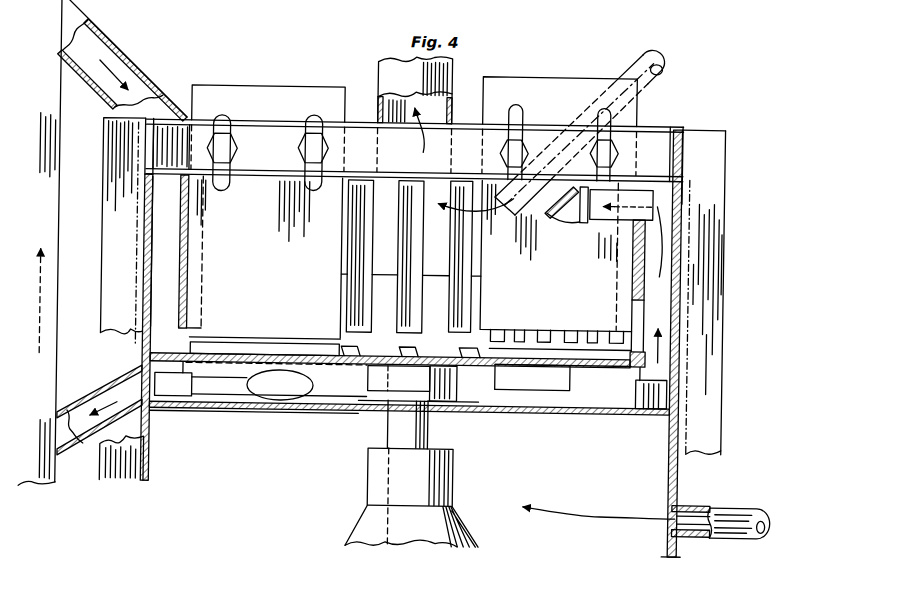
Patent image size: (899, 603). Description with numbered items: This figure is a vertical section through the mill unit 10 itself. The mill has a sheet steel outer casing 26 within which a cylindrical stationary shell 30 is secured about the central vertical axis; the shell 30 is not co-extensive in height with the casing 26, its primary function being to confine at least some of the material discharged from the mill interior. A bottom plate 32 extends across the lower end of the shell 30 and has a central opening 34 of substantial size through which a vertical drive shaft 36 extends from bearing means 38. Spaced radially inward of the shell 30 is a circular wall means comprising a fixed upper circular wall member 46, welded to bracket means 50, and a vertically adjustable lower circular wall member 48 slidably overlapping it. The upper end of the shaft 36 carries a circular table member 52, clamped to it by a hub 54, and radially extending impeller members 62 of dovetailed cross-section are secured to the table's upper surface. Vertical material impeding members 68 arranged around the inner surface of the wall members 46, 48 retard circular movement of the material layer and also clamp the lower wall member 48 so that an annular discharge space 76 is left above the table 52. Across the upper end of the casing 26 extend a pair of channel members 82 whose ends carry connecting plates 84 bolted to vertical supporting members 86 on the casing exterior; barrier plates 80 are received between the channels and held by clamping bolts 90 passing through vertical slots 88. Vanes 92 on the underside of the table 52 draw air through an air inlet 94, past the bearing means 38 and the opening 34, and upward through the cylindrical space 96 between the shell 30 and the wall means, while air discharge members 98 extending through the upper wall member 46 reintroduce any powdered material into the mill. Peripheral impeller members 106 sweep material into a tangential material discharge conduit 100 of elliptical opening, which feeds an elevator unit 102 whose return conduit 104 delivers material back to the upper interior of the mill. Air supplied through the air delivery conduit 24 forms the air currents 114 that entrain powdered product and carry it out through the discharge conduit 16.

The mill unit 10 is at (729, 271).
The discharge conduit 16 is at (451, 78).
The air delivery conduit 24 is at (660, 73).
The outer casing 26 is at (146, 233).
The stationary shell 30 is at (112, 339).
The bottom plate 32 is at (279, 404).
The central opening 34 is at (355, 414).
The drive shaft 36 is at (430, 428).
The bearing means 38 is at (382, 482).
The upper circular wall member 46 is at (142, 204).
The lower circular wall member 48 is at (188, 310).
The bracket means 50 is at (160, 175).
The table member 52 is at (571, 380).
The hub 54 is at (459, 382).
The impeller members 62 is at (233, 356).
The material impeding members 68 is at (206, 238).
The annular discharge space 76 is at (144, 358).
The barrier plates 80 is at (272, 94).
The channel members 82 is at (656, 140).
The connecting plates 84 is at (151, 124).
The vertical supporting members 86 is at (112, 270).
The vertical slots 88 is at (220, 117).
The clamping bolts 90 is at (297, 151).
The vanes 92 is at (240, 402).
The air inlet 94 is at (740, 504).
The cylindrical space 96 is at (167, 272).
The air discharge members 98 is at (605, 213).
The material discharge conduit 100 is at (287, 402).
The elevator unit 102 is at (57, 478).
The return conduit 104 is at (111, 47).
The impeller members 106 is at (175, 402).
The air currents 114 is at (418, 148).